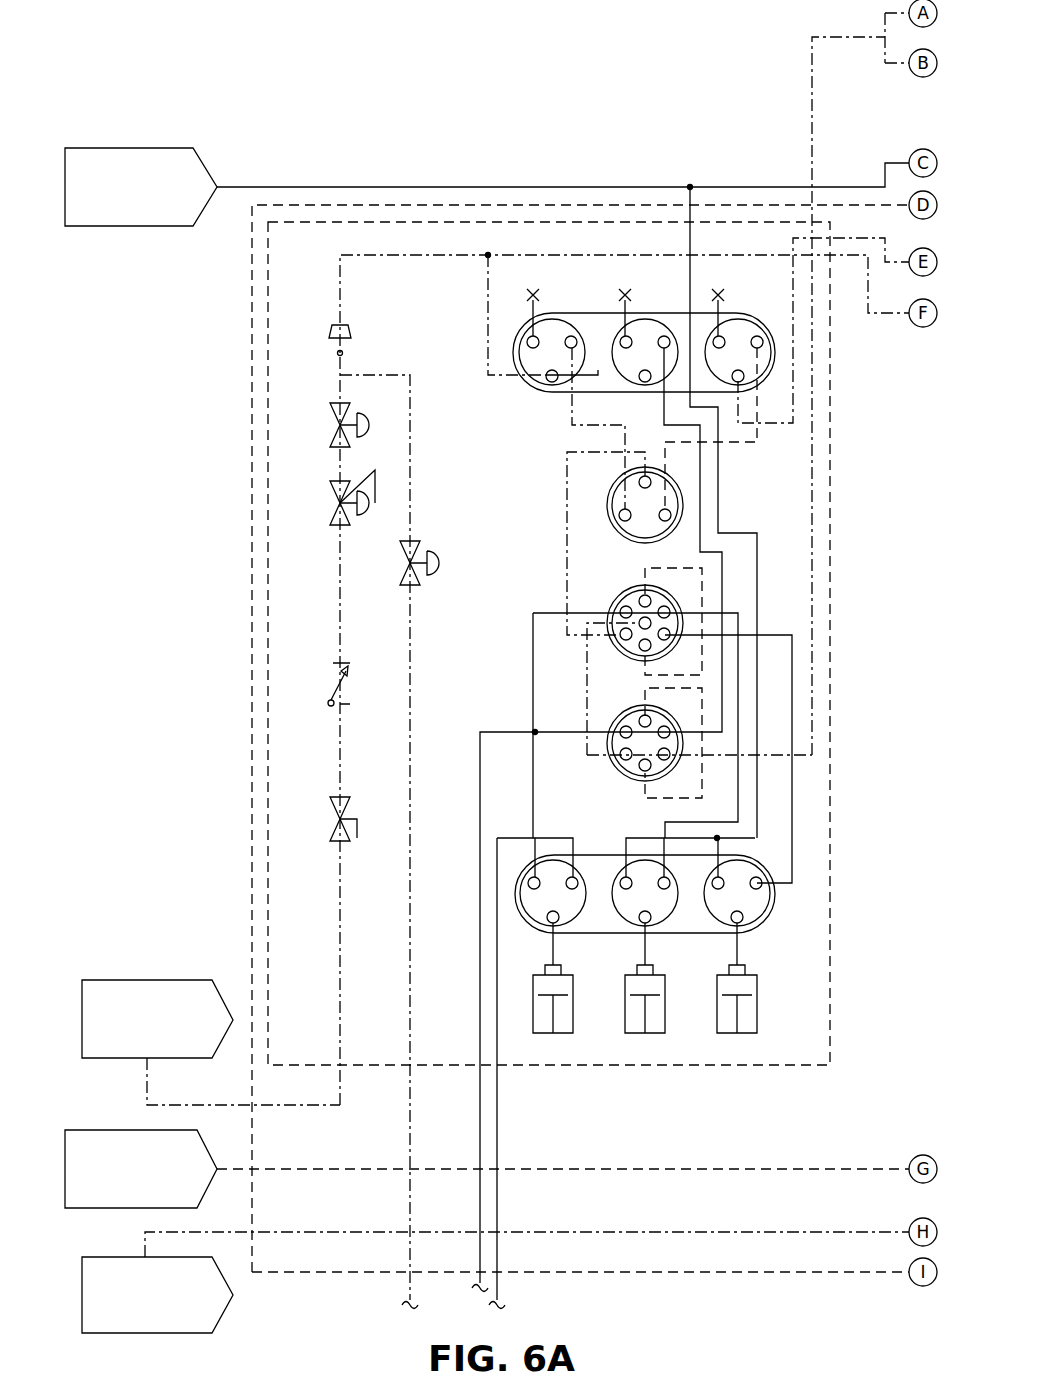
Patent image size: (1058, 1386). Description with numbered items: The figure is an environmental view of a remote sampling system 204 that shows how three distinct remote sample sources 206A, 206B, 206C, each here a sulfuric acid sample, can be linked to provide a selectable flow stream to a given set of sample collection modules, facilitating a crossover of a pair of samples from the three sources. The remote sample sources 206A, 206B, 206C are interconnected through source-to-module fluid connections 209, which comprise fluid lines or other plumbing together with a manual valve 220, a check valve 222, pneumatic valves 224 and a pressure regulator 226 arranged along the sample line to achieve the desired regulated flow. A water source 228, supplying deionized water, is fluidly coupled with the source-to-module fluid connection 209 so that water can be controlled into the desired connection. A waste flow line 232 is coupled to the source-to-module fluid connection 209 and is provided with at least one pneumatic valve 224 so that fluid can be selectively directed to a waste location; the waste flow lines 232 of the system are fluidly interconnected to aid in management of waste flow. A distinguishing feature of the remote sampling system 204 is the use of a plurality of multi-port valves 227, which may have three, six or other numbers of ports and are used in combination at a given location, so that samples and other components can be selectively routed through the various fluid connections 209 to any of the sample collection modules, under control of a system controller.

The remote sampling system 204 is at (272, 88).
The water source 228 is at (130, 147).
The pneumatic valve 224 is at (338, 422).
The pressure regulator 226 is at (338, 510).
The check valve 222 is at (330, 685).
The manual valve 220 is at (335, 825).
The waste flow line 232 is at (410, 875).
The source-to-module fluid connection 209 is at (340, 960).
The remote sample source 206A is at (148, 978).
The remote sample source 206B is at (97, 1128).
The remote sample source 206C is at (222, 1313).
The multi-port valve 227 is at (608, 532).